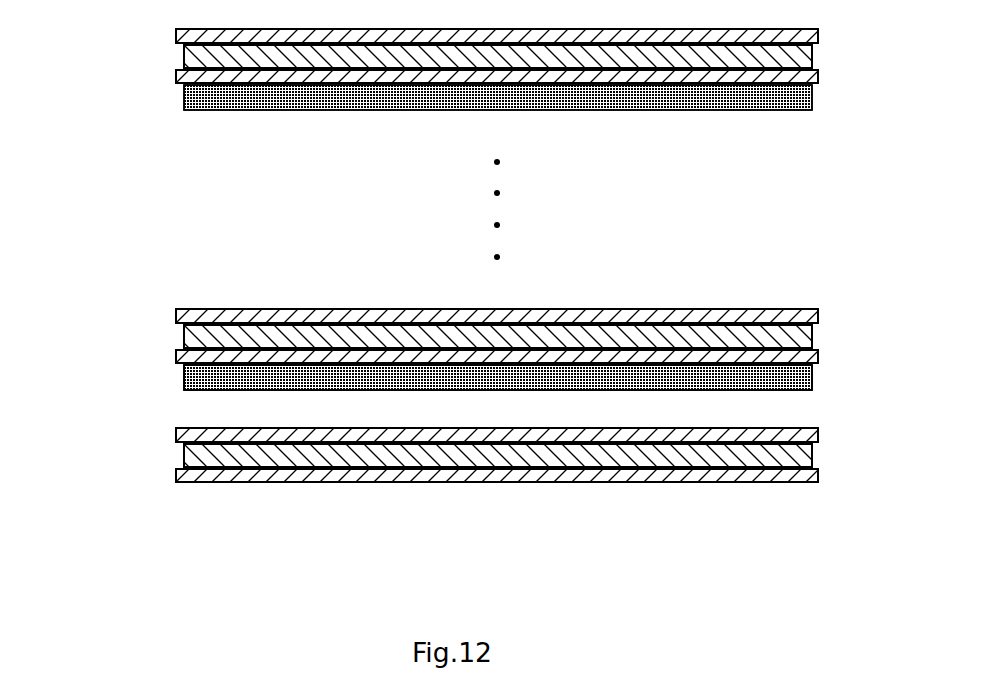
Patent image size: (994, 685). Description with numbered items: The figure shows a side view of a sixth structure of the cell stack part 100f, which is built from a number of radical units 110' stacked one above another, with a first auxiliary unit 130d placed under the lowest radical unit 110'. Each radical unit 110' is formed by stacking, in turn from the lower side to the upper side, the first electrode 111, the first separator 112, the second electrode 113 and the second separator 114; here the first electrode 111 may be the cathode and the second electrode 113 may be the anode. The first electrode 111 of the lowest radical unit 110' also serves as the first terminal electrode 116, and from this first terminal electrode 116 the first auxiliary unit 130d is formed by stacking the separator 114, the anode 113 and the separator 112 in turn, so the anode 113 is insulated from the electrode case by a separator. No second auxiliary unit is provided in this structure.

The cell stack part 100f is at (837, 33).
The radical unit 110' is at (420, 209).
The first electrode 111 is at (186, 97).
The first separator 112 is at (178, 73).
The second electrode 113 is at (186, 52).
The second separator 114 is at (178, 35).
The first terminal electrode 116 is at (447, 391).
The first auxiliary unit 130d is at (93, 430).